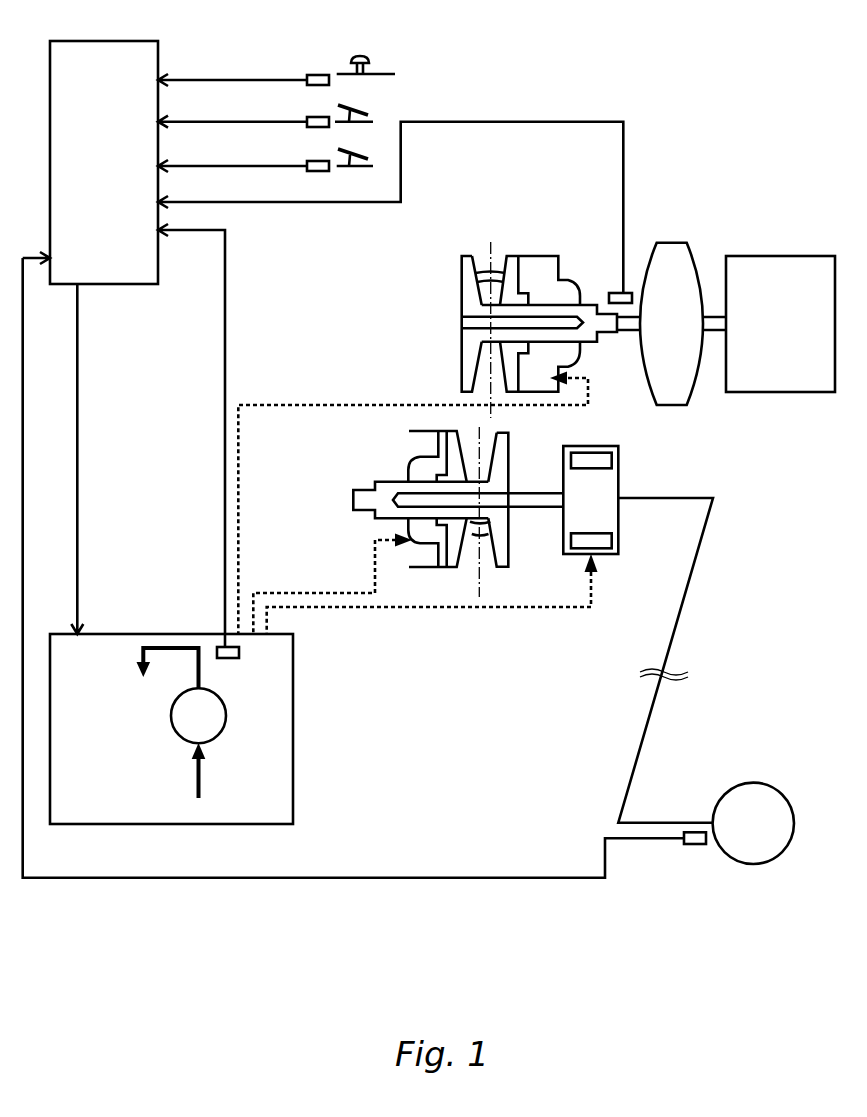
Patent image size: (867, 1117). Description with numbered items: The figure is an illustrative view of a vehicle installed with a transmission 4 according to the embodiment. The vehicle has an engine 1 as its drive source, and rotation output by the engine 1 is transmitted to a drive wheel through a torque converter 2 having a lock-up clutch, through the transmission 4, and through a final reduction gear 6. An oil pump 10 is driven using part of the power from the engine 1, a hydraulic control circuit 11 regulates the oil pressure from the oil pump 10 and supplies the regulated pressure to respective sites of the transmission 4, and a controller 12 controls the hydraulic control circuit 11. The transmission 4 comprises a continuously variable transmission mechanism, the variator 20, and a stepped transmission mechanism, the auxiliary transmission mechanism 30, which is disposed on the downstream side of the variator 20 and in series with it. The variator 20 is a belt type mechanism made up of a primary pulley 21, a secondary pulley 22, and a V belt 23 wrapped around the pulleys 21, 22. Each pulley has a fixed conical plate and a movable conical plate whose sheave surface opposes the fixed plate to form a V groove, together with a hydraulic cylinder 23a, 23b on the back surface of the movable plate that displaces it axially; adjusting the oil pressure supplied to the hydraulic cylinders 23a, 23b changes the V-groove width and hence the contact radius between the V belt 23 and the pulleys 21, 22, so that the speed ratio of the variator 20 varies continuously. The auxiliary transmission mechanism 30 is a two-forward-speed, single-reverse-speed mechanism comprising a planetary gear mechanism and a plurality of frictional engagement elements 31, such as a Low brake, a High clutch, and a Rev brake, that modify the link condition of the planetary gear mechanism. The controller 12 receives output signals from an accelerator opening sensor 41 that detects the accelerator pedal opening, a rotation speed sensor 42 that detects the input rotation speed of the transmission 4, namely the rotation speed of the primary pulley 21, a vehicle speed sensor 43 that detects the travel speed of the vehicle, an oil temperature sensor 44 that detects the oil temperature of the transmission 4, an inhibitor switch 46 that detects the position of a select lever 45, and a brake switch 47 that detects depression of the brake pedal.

The engine 1 is at (793, 256).
The torque converter 2 is at (672, 241).
The transmission 4 is at (592, 210).
The final reduction gear 6 is at (749, 783).
The oil pump 10 is at (226, 712).
The hydraulic control circuit 11 is at (100, 634).
The controller 12 is at (141, 40).
The variator 20 is at (420, 385).
The primary pulley 21 is at (516, 256).
The secondary pulley 22 is at (380, 481).
The V belt 23 is at (482, 272).
The hydraulic cylinder 23a is at (570, 297).
The hydraulic cylinder 23b is at (423, 467).
The auxiliary transmission mechanism 30 is at (619, 472).
The frictional engagement elements 31 is at (602, 547).
The accelerator opening sensor 41 is at (325, 126).
The rotation speed sensor 42 is at (628, 292).
The vehicle speed sensor 43 is at (698, 843).
The oil temperature sensor 44 is at (226, 648).
The select lever 45 is at (370, 73).
The inhibitor switch 46 is at (320, 75).
The brake switch 47 is at (325, 171).